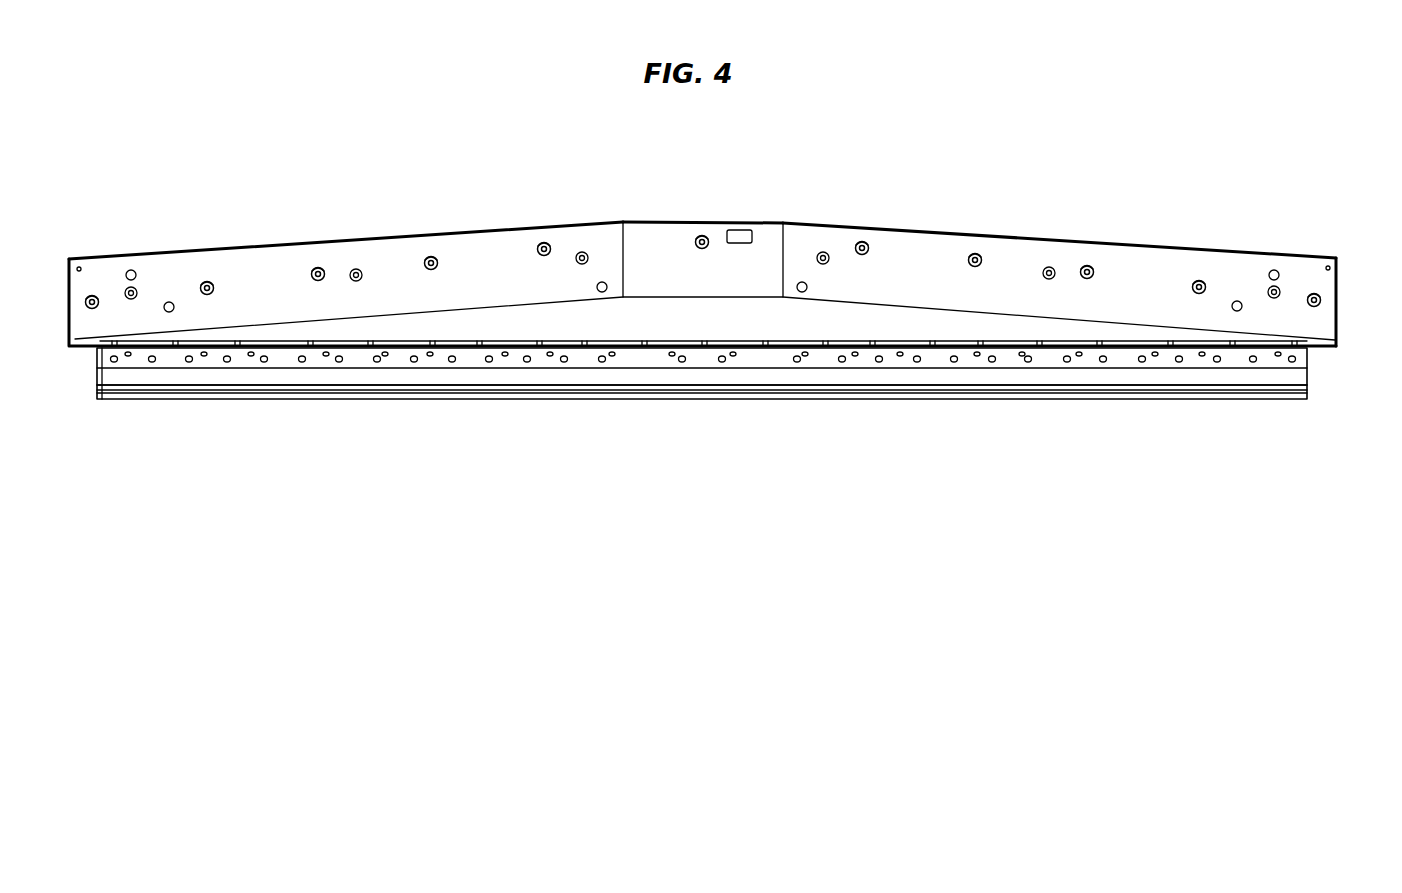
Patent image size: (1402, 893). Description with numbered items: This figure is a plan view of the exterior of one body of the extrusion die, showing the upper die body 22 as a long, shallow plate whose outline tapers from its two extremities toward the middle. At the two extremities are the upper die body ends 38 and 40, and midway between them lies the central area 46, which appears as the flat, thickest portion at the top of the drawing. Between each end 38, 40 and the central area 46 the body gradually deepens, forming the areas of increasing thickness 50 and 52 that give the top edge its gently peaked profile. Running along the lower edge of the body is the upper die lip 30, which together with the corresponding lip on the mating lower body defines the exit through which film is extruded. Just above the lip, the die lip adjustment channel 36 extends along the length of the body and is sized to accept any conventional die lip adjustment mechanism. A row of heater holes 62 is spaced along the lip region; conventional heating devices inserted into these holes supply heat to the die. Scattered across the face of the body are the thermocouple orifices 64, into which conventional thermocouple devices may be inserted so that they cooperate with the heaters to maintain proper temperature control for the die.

The upper die body 22 is at (636, 232).
The upper die lip 30 is at (118, 397).
The die lip adjustment channel 36 is at (97, 386).
The upper die body end 38 is at (68, 290).
The upper die body end 40 is at (1338, 290).
The central area 46 is at (673, 232).
The area of increasing thickness 50 is at (1153, 253).
The area of increasing thickness 52 is at (483, 228).
The heater holes 62 is at (114, 362).
The thermocouple orifices 64 is at (93, 294).